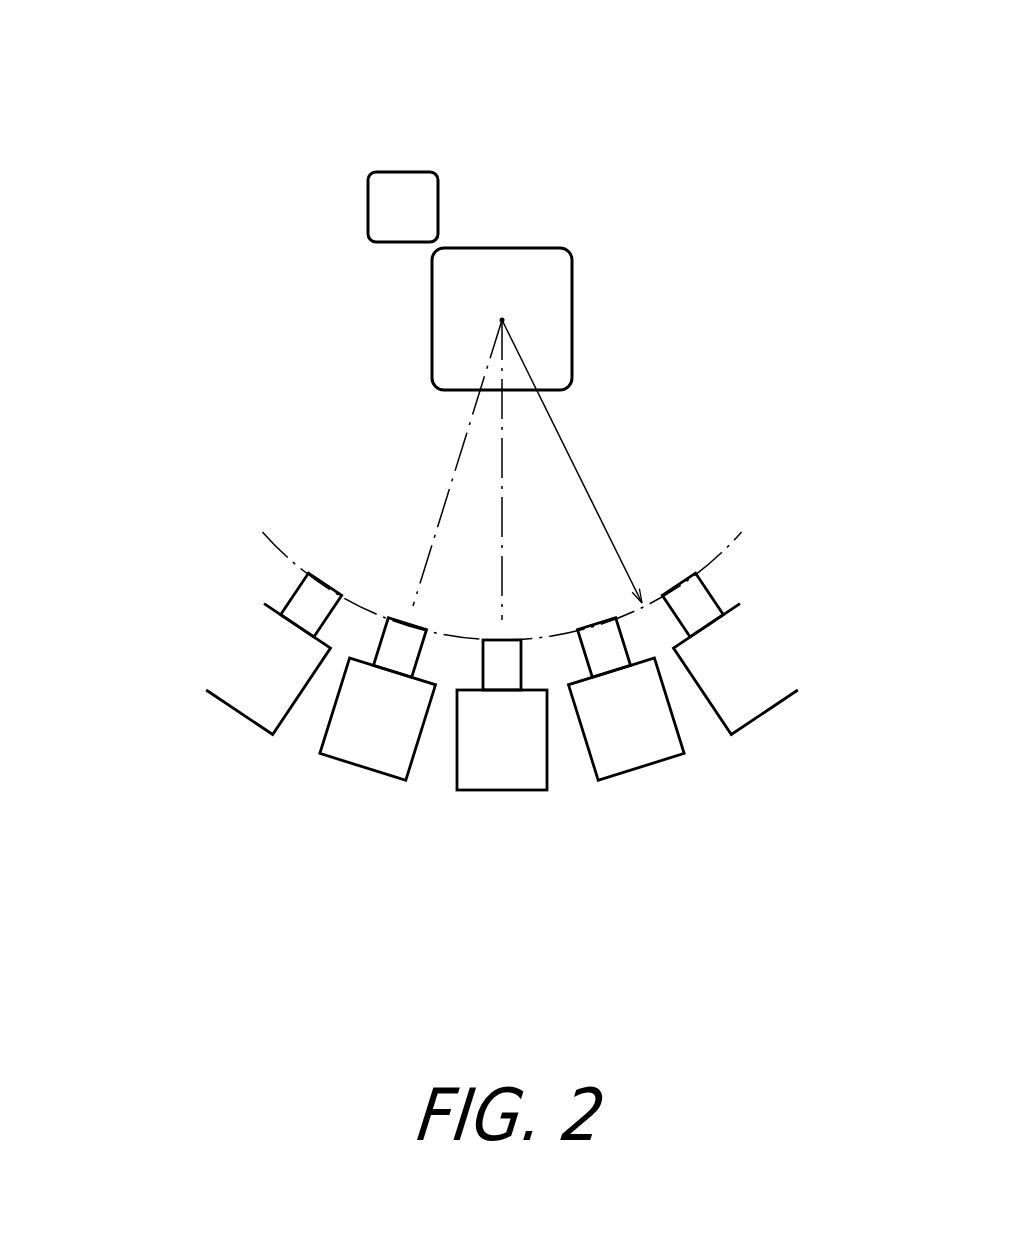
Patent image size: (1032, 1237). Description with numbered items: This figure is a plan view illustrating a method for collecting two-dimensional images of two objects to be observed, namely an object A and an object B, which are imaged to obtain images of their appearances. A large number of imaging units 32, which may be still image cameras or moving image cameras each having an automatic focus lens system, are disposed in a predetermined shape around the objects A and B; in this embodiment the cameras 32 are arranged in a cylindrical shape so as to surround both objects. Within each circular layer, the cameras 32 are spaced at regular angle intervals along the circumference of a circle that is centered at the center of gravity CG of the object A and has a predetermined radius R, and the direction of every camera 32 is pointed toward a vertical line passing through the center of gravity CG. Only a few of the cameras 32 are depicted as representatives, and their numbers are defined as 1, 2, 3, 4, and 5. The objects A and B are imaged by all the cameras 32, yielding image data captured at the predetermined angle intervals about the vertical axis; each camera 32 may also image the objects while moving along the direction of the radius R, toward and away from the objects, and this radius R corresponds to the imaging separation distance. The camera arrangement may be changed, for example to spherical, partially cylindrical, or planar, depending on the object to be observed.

The camera number one 1 is at (282, 648).
The camera number two 2 is at (385, 695).
The camera number three 3 is at (502, 715).
The camera number four 4 is at (619, 695).
The camera number five 5 is at (722, 648).
The imaging unit 32 is at (502, 817).
The object A is at (513, 248).
The object B is at (401, 172).
The center of gravity CG is at (502, 320).
The radius R is at (570, 450).